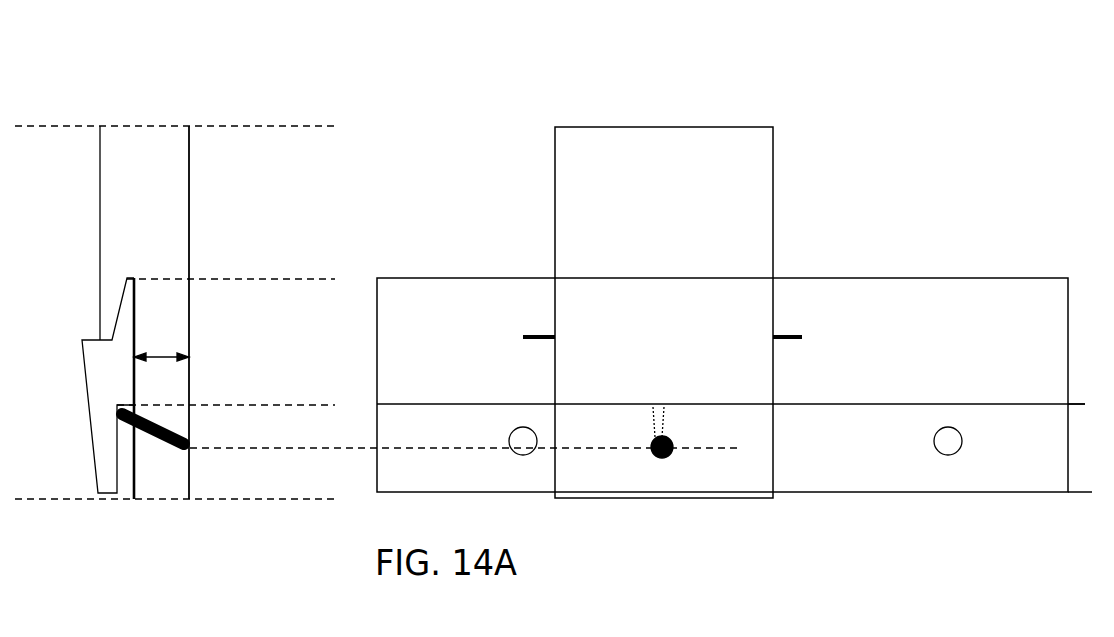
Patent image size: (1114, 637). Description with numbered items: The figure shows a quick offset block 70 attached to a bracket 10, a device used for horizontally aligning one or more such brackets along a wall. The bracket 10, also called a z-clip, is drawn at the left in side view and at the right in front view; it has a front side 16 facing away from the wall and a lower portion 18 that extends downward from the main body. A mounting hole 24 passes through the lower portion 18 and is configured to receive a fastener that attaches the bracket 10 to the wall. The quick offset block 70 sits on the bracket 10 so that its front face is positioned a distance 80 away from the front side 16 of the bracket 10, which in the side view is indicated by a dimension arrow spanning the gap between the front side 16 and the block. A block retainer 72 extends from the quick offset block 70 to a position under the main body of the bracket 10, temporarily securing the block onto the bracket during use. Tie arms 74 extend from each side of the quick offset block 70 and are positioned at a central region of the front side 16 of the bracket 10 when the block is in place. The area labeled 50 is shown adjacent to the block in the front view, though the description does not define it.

The bracket 10 is at (128, 308).
The front side 16 is at (135, 323).
The lower portion 18 is at (108, 472).
The mounting hole 24 is at (948, 440).
The frame 50 is at (487, 202).
The quick offset block 70 is at (146, 153).
The block retainer 72 is at (155, 435).
The tie arms 74 is at (533, 337).
The distance 80 is at (150, 359).